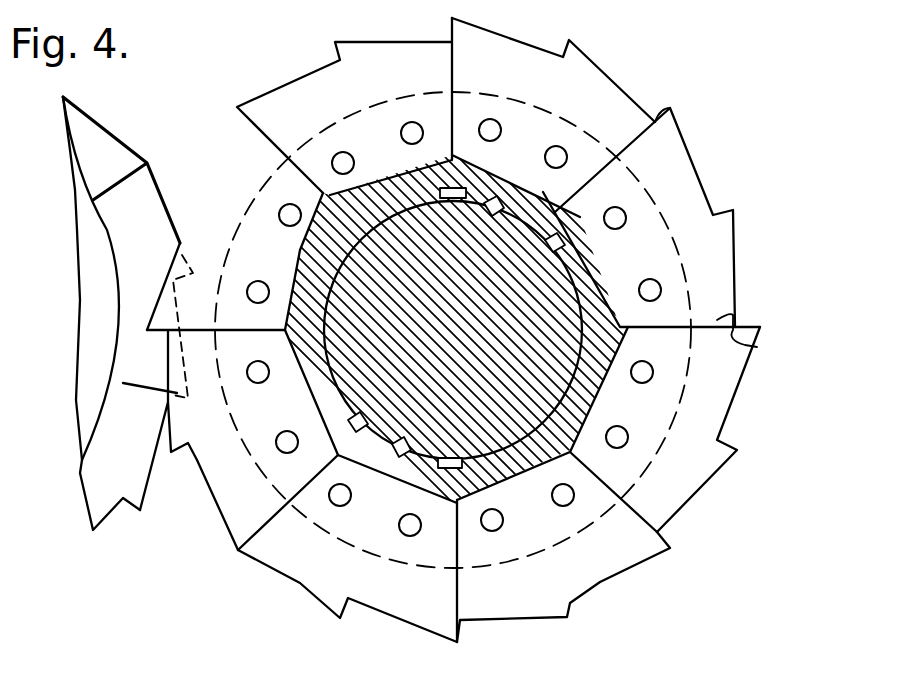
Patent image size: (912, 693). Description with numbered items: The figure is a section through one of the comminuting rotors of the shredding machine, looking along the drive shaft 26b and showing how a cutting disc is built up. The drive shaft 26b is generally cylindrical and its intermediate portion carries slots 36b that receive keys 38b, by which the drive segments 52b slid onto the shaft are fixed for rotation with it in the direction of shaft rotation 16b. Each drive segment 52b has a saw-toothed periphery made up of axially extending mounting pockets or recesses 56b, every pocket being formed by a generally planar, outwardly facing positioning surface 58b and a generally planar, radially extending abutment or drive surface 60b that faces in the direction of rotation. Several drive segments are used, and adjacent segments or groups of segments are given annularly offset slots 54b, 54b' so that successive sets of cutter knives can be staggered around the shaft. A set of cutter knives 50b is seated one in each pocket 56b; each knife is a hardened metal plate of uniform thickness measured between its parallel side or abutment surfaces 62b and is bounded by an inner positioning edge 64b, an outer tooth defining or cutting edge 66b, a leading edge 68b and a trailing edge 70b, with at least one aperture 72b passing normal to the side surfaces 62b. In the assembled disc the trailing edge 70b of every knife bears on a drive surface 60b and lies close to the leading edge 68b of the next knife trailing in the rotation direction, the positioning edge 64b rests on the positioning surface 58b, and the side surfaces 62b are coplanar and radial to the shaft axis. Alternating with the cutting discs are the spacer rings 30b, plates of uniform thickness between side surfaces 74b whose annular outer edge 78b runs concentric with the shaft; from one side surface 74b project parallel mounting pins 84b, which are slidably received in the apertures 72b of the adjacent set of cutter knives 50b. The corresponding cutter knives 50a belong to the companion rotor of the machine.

The drive shaft 26b is at (486, 370).
The cutter knives 50b is at (486, 321).
The cutter knives 50a is at (131, 215).
The side or abutment surfaces 62b is at (336, 110).
The abutment or drive surfaces 60b is at (690, 298).
The aperture 72b is at (490, 119).
The mounting pins 84b is at (628, 437).
The slots 36b is at (494, 222).
The slot 54b is at (526, 184).
The slot 54b' is at (450, 323).
The annular outer edge 78b is at (660, 467).
The direction of shaft rotation 16b is at (263, 43).
The spacer rings 30b is at (588, 121).
The leading edge 68b is at (655, 118).
The trailing edge 70b is at (667, 108).
The outer tooth defining or cutting edge 66b is at (735, 230).
The drive segments 52b is at (599, 251).
The positioning surfaces 58b is at (612, 257).
The inner positioning edge 64b is at (577, 307).
The mounting pockets or recesses 56b is at (346, 174).
The key 38b is at (387, 482).
The side or abutment surfaces 74b is at (275, 7).